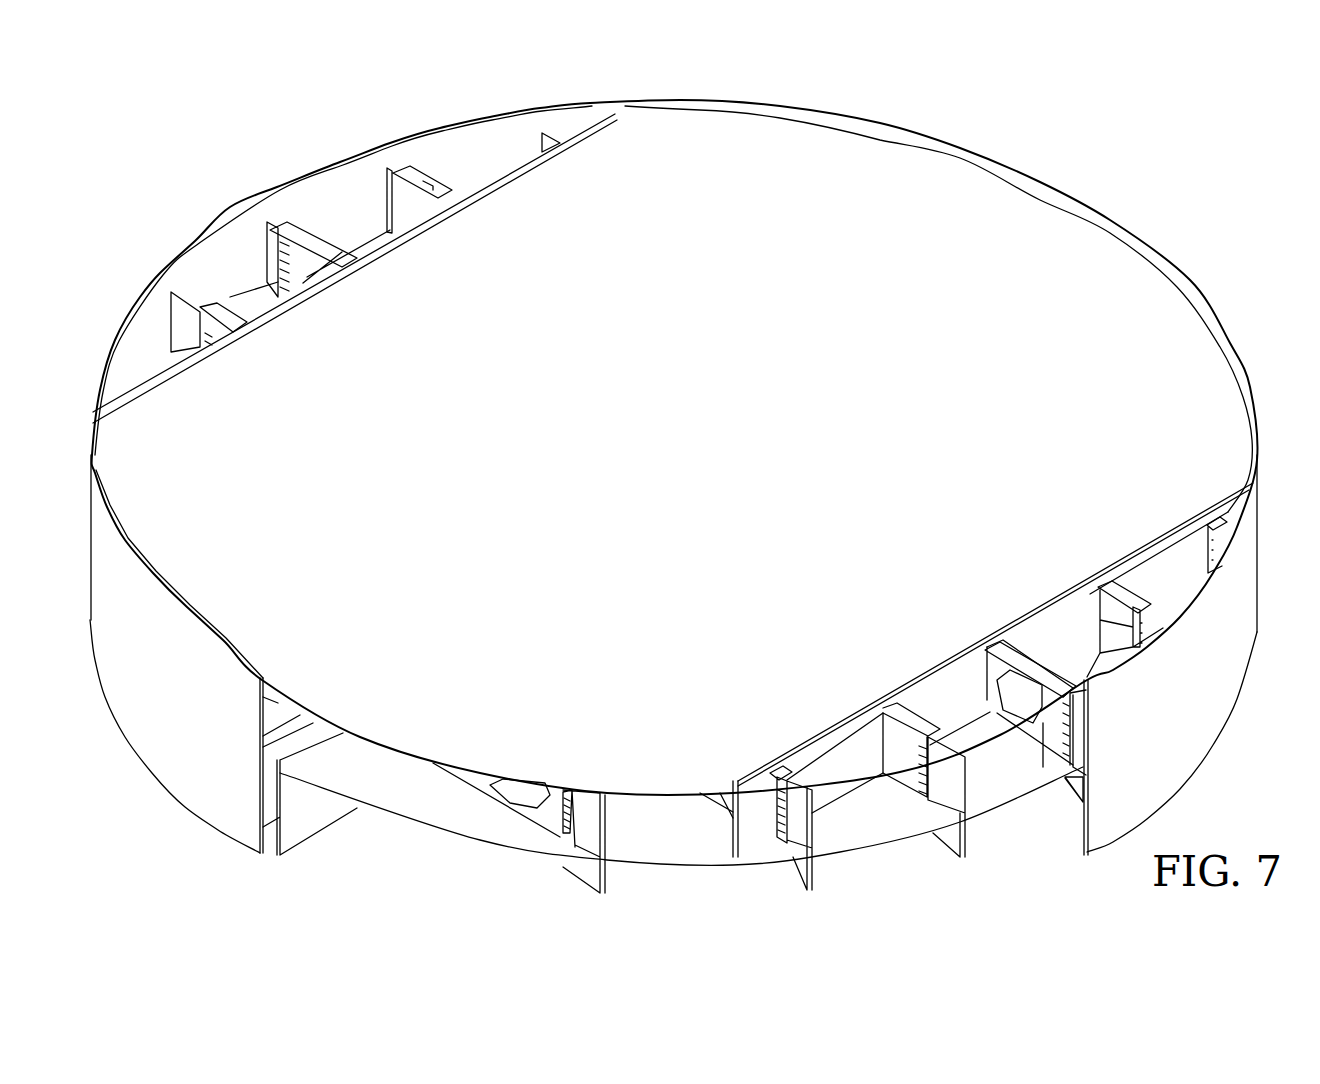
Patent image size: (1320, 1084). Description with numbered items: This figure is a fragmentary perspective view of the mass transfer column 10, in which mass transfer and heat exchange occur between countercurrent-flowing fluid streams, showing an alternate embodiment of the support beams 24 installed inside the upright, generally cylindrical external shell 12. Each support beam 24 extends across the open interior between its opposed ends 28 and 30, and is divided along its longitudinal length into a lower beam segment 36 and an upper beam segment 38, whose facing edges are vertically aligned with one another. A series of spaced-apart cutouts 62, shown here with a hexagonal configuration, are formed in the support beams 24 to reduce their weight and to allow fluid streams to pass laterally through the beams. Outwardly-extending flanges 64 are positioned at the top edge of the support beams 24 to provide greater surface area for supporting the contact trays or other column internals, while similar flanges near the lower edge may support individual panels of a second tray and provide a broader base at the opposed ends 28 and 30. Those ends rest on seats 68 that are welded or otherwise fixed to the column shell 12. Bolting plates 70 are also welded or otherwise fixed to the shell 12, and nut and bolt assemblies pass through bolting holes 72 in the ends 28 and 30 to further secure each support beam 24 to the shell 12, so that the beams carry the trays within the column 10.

The mass transfer column 10 is at (1063, 176).
The external shell 12 is at (955, 157).
The support beam 24 is at (1034, 644).
The opposed end 28 is at (278, 257).
The opposed end 30 is at (1069, 716).
The lower beam segment 36 is at (1048, 723).
The upper beam segment 38 is at (1047, 697).
The cutout 62 is at (1017, 700).
The outwardly-extending flange 64 is at (988, 648).
The seat 68 is at (1077, 774).
The bolting plate 70 is at (185, 313).
The bolting hole 72 is at (278, 286).